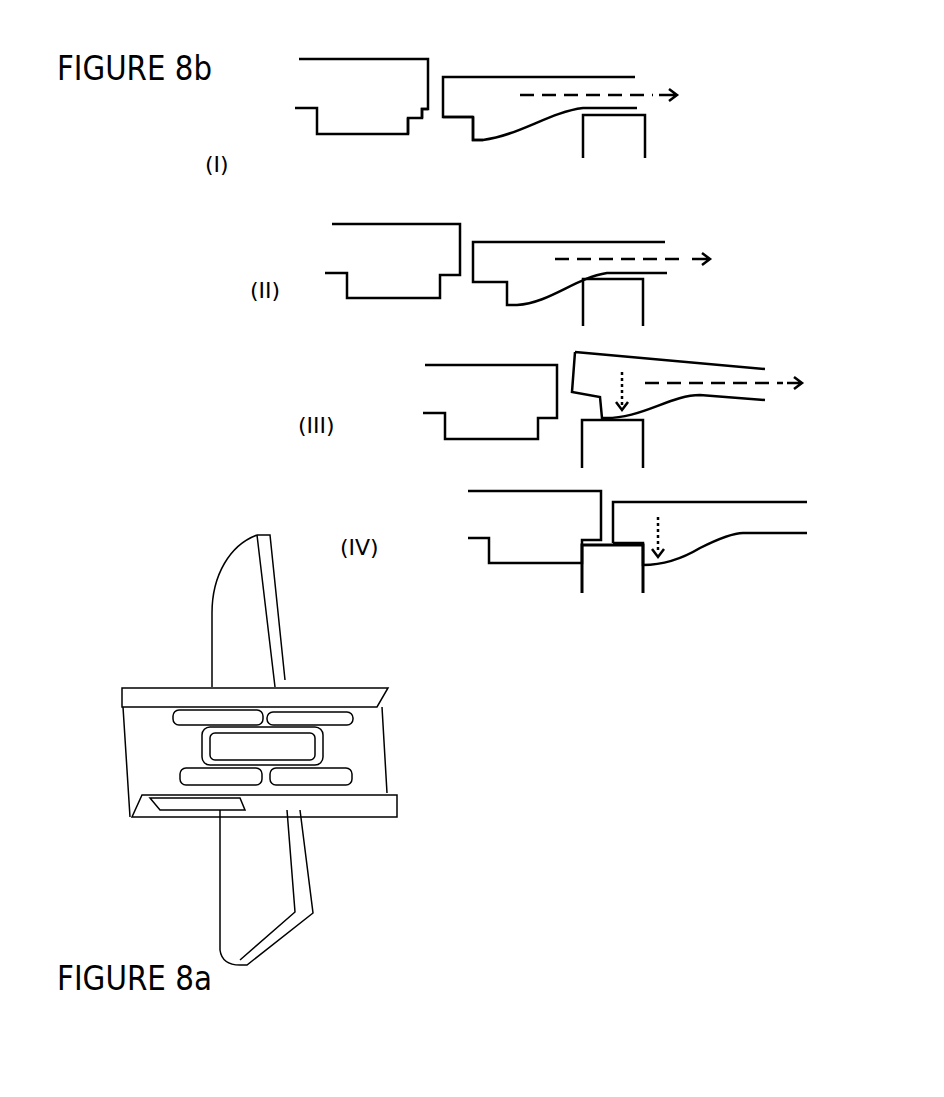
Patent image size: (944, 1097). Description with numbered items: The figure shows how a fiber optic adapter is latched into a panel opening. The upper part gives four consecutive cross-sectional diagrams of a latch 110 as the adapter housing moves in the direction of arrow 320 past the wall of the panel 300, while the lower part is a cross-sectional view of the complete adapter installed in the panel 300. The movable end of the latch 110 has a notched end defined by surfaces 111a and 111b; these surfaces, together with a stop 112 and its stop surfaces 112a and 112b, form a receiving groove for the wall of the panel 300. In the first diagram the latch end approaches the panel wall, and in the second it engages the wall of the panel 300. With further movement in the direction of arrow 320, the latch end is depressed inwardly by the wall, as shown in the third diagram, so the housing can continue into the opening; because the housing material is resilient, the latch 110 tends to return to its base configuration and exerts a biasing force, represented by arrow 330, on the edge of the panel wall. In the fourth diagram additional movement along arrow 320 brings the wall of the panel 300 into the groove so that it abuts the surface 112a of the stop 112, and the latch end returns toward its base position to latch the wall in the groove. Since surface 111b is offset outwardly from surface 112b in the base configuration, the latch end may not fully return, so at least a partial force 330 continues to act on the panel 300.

In FIG. 8B, the latch 110 is at (507, 107).
In FIG. 8A, the latch 110 is at (343, 822).
In FIG. 8B, the surface 111a is at (472, 133).
In FIG. 8B, the surface 111b is at (460, 118).
In FIG. 8B, the stop 112 is at (348, 122).
In FIG. 8A, the stop 112 is at (262, 818).
In FIG. 8B, the stop surface 112a is at (408, 118).
In FIG. 8B, the stop surface 112b is at (422, 108).
In FIG. 8B, the panel 300 is at (633, 137).
In FIG. 8A, the panel 300 is at (268, 848).
In FIG. 8B, the arrow 320 is at (657, 97).
In FIG. 8B, the arrow 330 is at (665, 537).